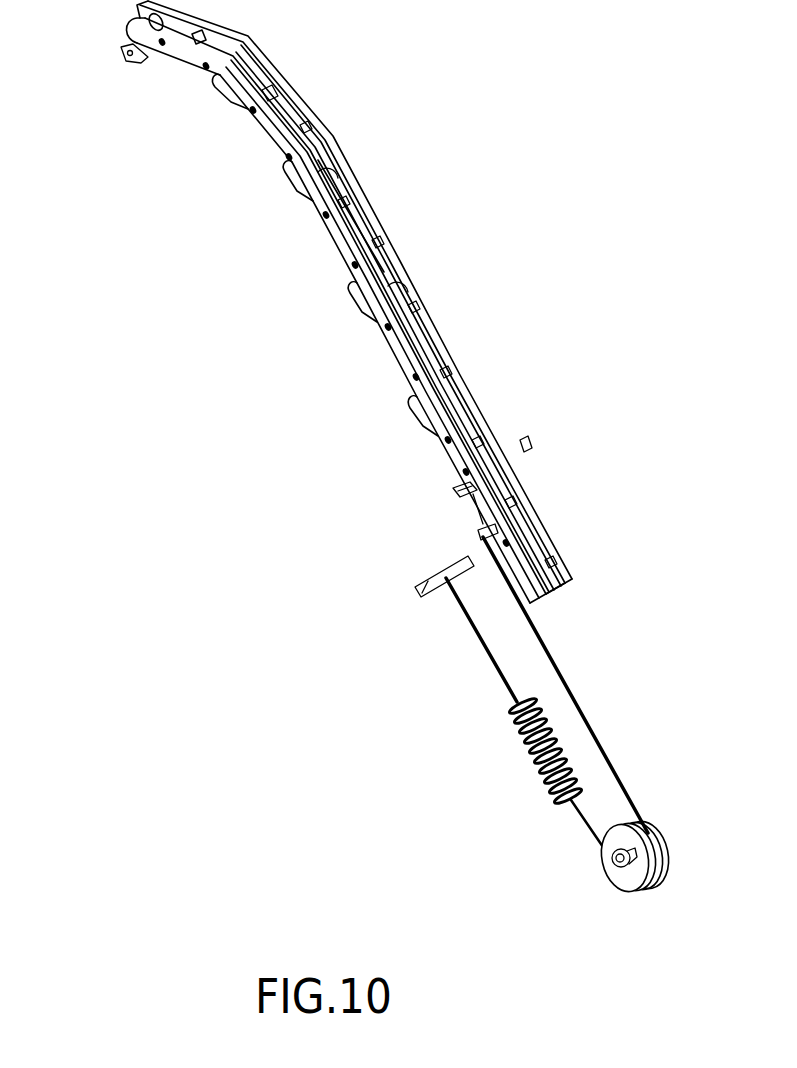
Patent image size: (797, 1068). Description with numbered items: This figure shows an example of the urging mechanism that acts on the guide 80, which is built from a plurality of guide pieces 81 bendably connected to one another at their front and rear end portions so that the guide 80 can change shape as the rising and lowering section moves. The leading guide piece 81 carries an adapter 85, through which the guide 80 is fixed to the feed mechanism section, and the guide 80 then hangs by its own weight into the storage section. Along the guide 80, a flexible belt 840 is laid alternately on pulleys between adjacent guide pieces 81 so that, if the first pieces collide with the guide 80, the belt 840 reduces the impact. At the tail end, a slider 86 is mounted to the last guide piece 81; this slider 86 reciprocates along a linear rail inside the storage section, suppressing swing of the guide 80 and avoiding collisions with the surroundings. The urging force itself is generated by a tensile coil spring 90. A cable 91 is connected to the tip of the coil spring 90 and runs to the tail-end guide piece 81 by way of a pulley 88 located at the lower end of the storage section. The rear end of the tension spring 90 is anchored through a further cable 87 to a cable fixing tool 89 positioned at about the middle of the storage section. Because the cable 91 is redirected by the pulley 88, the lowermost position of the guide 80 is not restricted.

The guide 80 is at (495, 138).
The guide piece 81 is at (272, 145).
The adapter 85 is at (137, 58).
The belt 840 is at (412, 330).
The slider 86 is at (445, 490).
The cable 87 is at (488, 652).
The pulley 88 is at (668, 830).
The cable fixing tool 89 is at (418, 592).
The tensile coil spring 90 is at (530, 773).
The cable 91 is at (575, 680).